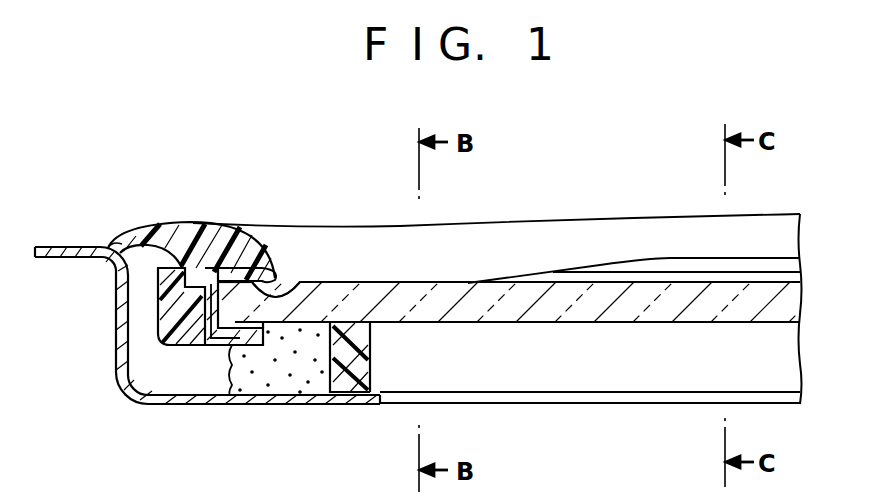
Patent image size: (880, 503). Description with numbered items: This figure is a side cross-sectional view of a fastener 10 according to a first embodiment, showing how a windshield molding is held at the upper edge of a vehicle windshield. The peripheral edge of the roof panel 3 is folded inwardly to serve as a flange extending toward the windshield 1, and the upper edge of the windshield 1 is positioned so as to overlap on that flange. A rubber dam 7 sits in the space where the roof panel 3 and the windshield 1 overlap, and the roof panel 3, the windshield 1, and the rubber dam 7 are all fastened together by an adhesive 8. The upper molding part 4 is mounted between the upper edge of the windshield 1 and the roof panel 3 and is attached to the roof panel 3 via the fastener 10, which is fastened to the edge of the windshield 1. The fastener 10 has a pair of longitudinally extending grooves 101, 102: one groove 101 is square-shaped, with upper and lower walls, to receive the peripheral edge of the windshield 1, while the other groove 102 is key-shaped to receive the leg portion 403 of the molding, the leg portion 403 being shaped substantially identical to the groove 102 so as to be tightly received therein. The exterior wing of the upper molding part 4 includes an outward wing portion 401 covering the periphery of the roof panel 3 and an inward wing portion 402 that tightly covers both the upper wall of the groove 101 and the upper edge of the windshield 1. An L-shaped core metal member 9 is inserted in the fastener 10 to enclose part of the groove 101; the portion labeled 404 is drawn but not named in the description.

The windshield 1 is at (553, 312).
The roof panel 3 is at (50, 246).
The upper molding part 4 is at (178, 226).
The rubber dam 7 is at (355, 378).
The adhesive 8 is at (270, 372).
The L-shaped core metal member 9 is at (216, 348).
The fastener 10 is at (180, 354).
The groove 101 is at (273, 293).
The groove 102 is at (157, 312).
The outward wing portion 401 is at (118, 248).
The inward wing portion 402 is at (277, 278).
The leg portion 403 is at (160, 284).
The film layer 404 is at (660, 265).